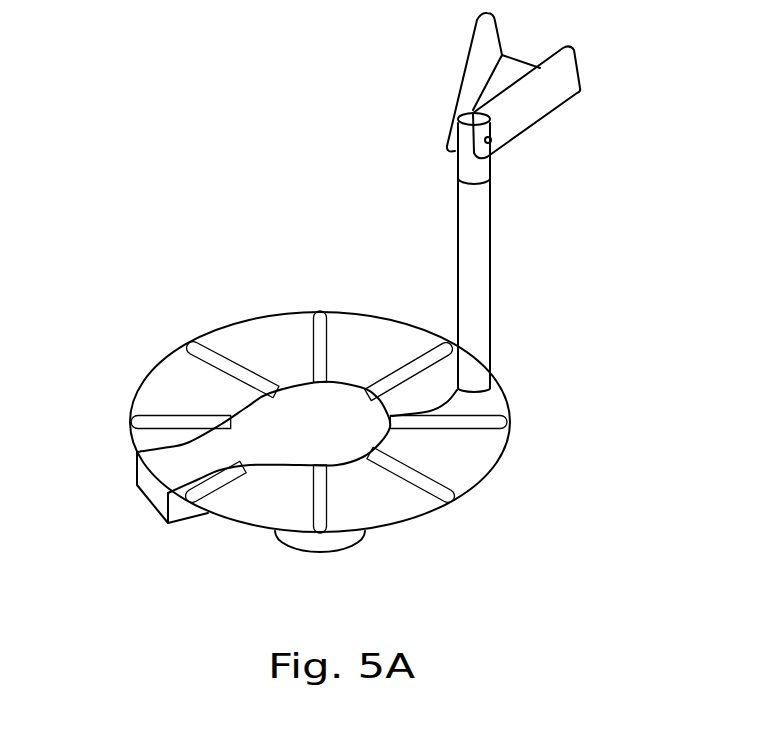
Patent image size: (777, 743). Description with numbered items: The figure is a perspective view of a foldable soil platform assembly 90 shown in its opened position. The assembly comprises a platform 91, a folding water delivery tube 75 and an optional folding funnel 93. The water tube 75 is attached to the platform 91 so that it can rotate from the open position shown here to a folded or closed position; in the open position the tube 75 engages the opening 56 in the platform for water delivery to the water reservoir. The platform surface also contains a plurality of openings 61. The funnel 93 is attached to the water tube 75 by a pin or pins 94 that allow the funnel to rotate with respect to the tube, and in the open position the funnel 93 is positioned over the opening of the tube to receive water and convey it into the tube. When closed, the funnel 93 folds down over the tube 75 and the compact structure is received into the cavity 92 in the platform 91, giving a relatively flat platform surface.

The foldable soil platform assembly 90 is at (505, 488).
The platform 91 is at (382, 422).
The cavity 92 is at (138, 465).
The folding funnel 93 is at (555, 85).
The pin 94 is at (547, 163).
The folding water delivery tube 75 is at (527, 252).
The opening 56 is at (437, 419).
The openings 61 is at (414, 541).